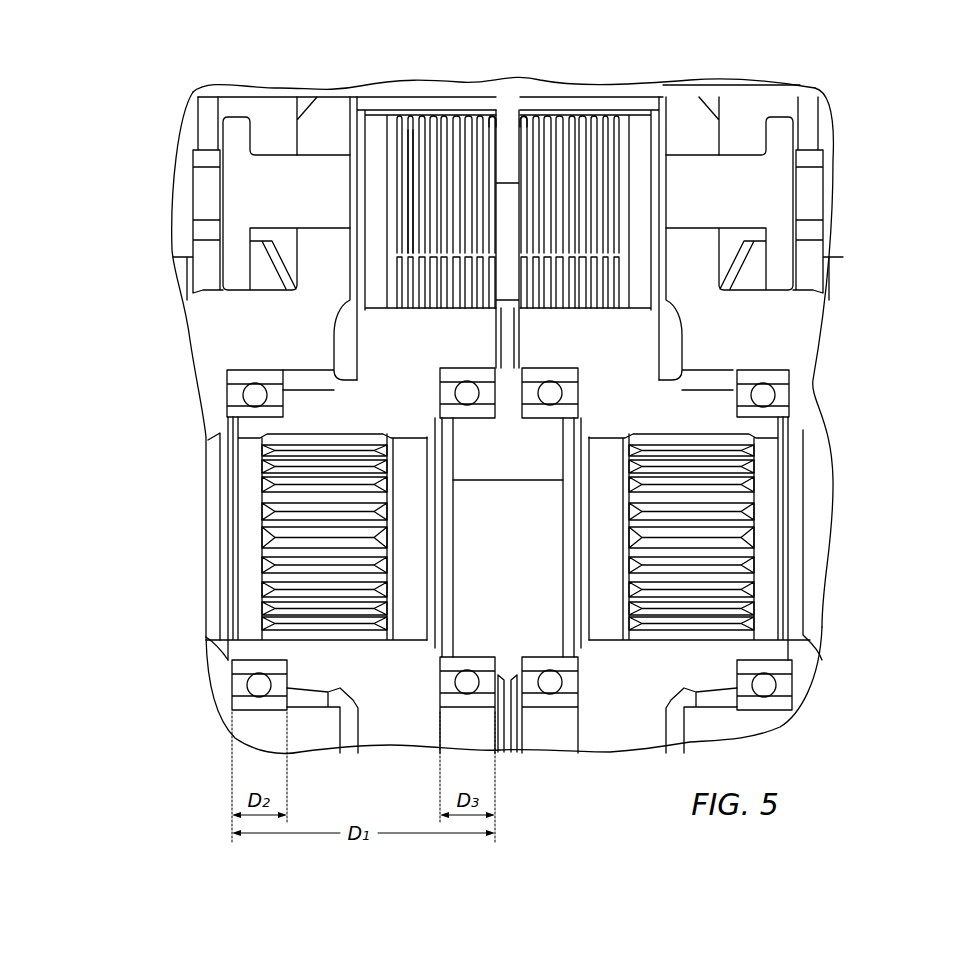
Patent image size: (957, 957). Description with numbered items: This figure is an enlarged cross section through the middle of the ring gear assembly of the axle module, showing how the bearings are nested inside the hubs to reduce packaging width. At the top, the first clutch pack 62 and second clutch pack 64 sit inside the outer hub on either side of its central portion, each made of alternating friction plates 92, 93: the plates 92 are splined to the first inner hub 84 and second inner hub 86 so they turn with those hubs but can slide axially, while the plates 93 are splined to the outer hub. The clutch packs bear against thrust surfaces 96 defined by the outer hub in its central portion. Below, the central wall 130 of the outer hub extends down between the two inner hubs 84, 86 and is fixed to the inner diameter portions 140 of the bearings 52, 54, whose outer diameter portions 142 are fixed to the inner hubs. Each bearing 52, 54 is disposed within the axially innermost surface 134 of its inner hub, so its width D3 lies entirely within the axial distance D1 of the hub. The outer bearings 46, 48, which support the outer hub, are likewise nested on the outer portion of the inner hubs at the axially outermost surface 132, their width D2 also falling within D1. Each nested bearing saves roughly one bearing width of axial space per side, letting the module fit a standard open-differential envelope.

The first bearing 46 is at (247, 705).
The second bearing 48 is at (781, 702).
The first set of bearings 52 is at (454, 706).
The second set of bearings 54 is at (567, 702).
The first clutch pack 62 is at (399, 175).
The second clutch pack 64 is at (578, 142).
The first inner hub 84 is at (388, 718).
The second inner hub 86 is at (640, 333).
The friction plates 92 is at (405, 160).
The friction plates 93 is at (415, 150).
The thrust surfaces 96 is at (521, 114).
The central wall 130 is at (494, 334).
The axially outermost surface 132 is at (224, 651).
The axially innermost surface 134 is at (502, 724).
The inner diameter portions 140 is at (453, 412).
The outer diameter portions 142 is at (467, 366).